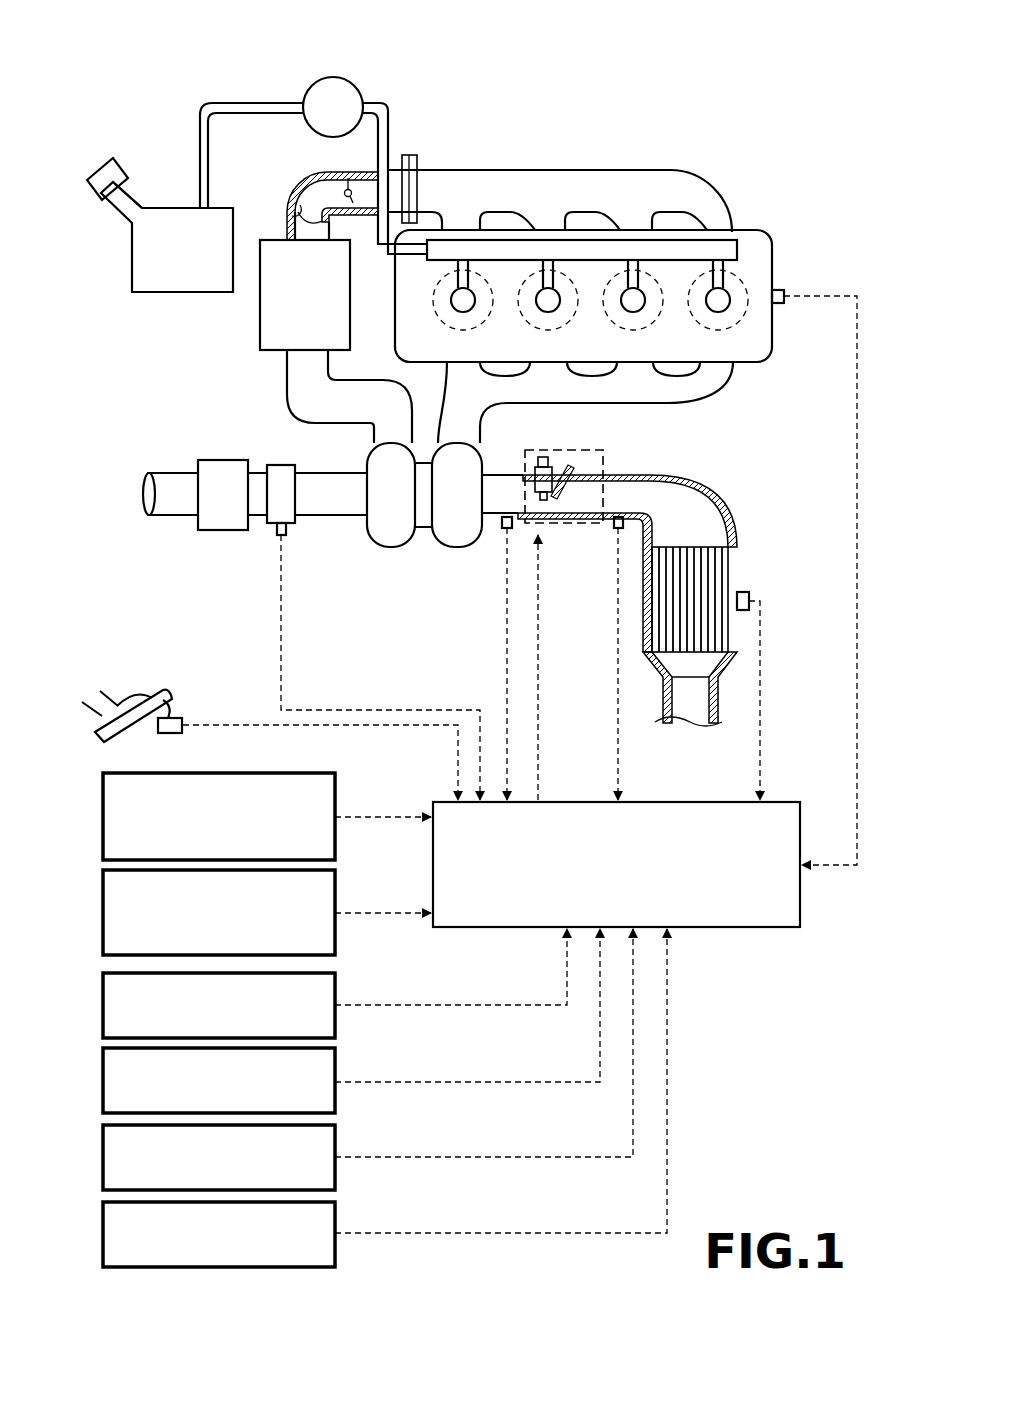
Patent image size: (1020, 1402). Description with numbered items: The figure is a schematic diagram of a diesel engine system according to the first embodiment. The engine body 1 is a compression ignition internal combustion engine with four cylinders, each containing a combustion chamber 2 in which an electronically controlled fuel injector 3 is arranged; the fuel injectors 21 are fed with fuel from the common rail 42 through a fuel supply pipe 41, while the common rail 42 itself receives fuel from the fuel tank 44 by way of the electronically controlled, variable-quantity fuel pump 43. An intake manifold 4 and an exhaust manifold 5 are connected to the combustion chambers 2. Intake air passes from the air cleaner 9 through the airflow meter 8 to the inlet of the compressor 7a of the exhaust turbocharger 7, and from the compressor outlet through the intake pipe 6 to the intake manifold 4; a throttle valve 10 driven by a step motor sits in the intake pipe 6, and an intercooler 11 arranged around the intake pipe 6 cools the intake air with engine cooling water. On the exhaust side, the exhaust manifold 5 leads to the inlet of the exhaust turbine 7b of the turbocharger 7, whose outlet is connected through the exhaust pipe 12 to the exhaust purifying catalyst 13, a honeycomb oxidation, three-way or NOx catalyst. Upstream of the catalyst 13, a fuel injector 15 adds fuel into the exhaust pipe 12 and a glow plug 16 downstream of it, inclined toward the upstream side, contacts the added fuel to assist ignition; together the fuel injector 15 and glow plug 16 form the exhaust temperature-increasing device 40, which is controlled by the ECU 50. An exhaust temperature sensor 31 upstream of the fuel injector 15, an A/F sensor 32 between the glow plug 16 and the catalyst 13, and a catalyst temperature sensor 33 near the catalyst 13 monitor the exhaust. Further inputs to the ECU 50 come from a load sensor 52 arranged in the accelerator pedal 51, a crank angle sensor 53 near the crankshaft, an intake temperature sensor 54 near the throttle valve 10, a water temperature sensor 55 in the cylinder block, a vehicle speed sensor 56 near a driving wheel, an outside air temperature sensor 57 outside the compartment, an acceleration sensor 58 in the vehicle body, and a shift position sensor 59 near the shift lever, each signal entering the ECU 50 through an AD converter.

The engine body 1 is at (790, 218).
The combustion chamber 2 is at (452, 330).
The fuel injector 3 is at (474, 308).
The intake manifold 4 is at (697, 190).
The exhaust manifold 5 is at (733, 385).
The intake pipe 6 is at (290, 215).
The exhaust turbocharger 7 is at (423, 440).
The compressor 7a is at (392, 548).
The exhaust turbine 7b is at (455, 548).
The airflow meter 8 is at (275, 535).
The air cleaner 9 is at (223, 460).
The throttle valve 10 is at (345, 190).
The intercooler 11 is at (260, 324).
The exhaust pipe 12 is at (505, 530).
The exhaust purifying catalyst 13 is at (740, 560).
The fuel injector 15 is at (542, 457).
The glow plug 16 is at (574, 466).
The fuel injector 21 is at (736, 285).
The exhaust temperature sensor 31 is at (524, 527).
The A/F sensor 32 is at (616, 530).
The catalyst temperature sensor 33 is at (750, 600).
The exhaust temperature-increasing device 40 is at (525, 458).
The fuel supply pipe 41 is at (383, 262).
The common rail 42 is at (596, 248).
The fuel pump 43 is at (336, 77).
The fuel tank 44 is at (135, 243).
The ECU 50 is at (740, 928).
The accelerator pedal 51 is at (168, 690).
The load sensor 52 is at (184, 722).
The crank angle sensor 53 is at (103, 815).
The intake temperature sensor 54 is at (103, 908).
The water temperature sensor 55 is at (778, 296).
The vehicle speed sensor 56 is at (103, 1008).
The outside air temperature sensor 57 is at (103, 1082).
The acceleration sensor 58 is at (103, 1157).
The shift position sensor 59 is at (103, 1234).